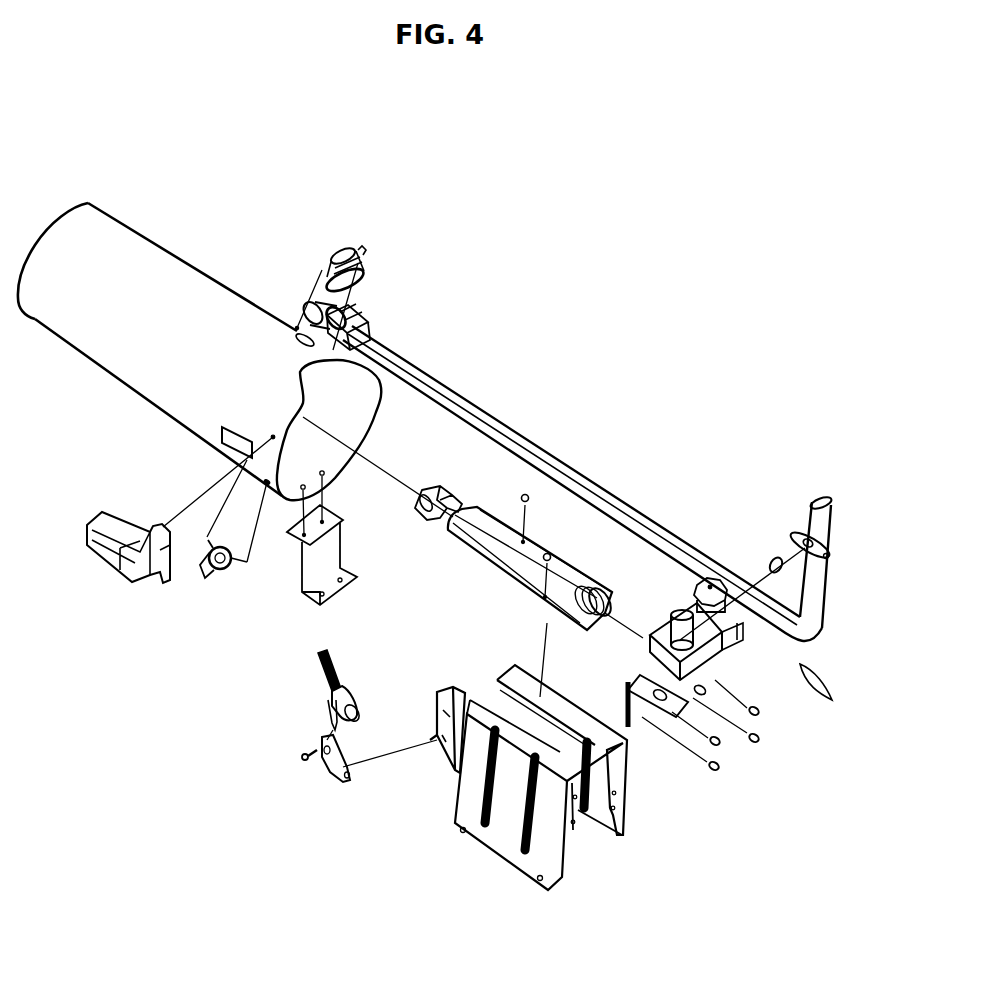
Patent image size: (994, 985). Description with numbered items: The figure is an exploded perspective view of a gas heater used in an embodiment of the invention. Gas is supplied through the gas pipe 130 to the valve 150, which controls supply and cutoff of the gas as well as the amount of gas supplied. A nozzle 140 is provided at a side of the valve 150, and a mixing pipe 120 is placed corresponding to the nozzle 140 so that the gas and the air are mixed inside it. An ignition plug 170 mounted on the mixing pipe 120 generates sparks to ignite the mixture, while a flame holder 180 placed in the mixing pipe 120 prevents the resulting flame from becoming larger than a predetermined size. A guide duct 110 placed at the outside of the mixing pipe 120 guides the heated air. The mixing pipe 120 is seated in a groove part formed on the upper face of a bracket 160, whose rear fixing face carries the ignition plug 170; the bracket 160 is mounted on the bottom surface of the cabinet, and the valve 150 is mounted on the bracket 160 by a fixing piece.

The guide duct 110 is at (135, 283).
The mixing pipe 120 is at (517, 557).
The gas pipe 130 is at (482, 428).
The nozzle 140 is at (643, 638).
The valve 150 is at (757, 655).
The bracket 160 is at (510, 807).
The ignition plug 170 is at (318, 672).
The flame holder 180 is at (404, 546).